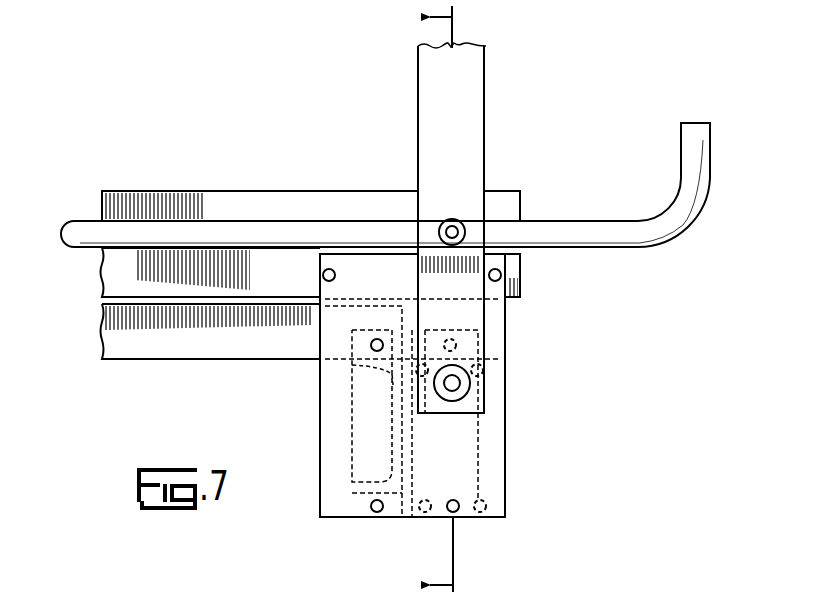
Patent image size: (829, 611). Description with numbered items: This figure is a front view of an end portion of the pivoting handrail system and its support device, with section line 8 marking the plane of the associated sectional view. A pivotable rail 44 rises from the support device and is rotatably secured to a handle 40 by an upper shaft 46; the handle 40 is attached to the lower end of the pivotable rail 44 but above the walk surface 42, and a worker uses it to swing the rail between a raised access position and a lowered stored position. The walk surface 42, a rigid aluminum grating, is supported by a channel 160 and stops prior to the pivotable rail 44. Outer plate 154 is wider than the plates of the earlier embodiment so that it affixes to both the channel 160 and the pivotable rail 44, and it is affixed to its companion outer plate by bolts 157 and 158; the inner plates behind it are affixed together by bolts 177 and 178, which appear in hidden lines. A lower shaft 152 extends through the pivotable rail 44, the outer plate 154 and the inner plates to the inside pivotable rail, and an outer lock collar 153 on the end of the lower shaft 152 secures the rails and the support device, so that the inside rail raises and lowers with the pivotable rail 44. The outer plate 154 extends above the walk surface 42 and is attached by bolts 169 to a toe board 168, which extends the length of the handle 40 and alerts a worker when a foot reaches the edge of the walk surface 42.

The section line 8- 8 is at (460, 306).
The handle 40 is at (577, 226).
The walk surface 42 is at (222, 351).
The pivotable rail 44 is at (462, 88).
The upper shaft 46 is at (458, 222).
The lower shaft 152 is at (452, 383).
The outer lock collar 153 is at (455, 400).
The outer plate 154 is at (493, 474).
The bolt 157 is at (375, 512).
The bolt 158 is at (372, 348).
The channel 160 is at (352, 481).
The toe board 168 is at (263, 208).
The bolt 169 is at (323, 276).
The bolt 177 is at (423, 512).
The bolt 178 is at (400, 376).